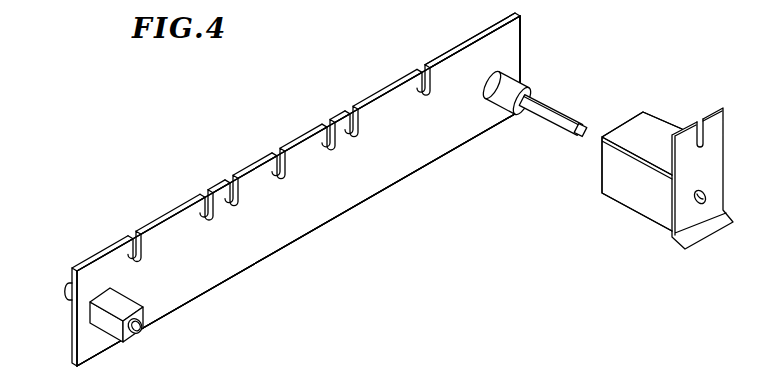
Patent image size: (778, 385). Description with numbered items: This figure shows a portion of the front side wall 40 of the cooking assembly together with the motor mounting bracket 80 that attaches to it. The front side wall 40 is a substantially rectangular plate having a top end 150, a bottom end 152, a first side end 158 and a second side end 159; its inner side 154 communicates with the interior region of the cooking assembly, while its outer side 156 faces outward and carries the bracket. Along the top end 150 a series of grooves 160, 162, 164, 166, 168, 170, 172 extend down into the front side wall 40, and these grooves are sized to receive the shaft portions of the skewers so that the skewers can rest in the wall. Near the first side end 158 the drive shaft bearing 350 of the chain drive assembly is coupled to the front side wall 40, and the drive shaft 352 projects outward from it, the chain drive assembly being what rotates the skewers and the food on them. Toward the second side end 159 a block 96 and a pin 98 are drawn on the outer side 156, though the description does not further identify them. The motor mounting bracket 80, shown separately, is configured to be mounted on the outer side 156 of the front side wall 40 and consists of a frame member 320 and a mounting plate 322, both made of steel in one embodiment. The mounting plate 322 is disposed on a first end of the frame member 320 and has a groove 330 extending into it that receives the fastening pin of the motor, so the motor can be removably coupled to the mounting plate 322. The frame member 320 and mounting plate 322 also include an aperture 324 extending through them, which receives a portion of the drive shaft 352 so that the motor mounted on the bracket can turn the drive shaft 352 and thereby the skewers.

The front side wall 40 is at (375, 90).
The motor mounting bracket 80 is at (654, 104).
The block 96 is at (115, 303).
The pin 98 is at (142, 331).
The top end 150 is at (112, 250).
The bottom end 152 is at (97, 357).
The inner side 154 is at (472, 40).
The outer side 156 is at (275, 223).
The first side end 158 is at (522, 48).
The second side end 159 is at (73, 327).
The groove 160 is at (135, 237).
The groove 162 is at (206, 198).
The groove 164 is at (232, 180).
The groove 166 is at (280, 155).
The groove 168 is at (329, 126).
The groove 170 is at (352, 112).
The groove 172 is at (424, 70).
The frame member 320 is at (632, 187).
The mounting plate 322 is at (710, 163).
The aperture 324 is at (697, 205).
The groove 330 is at (703, 140).
The drive shaft bearing 350 is at (503, 85).
The drive shaft 352 is at (558, 103).